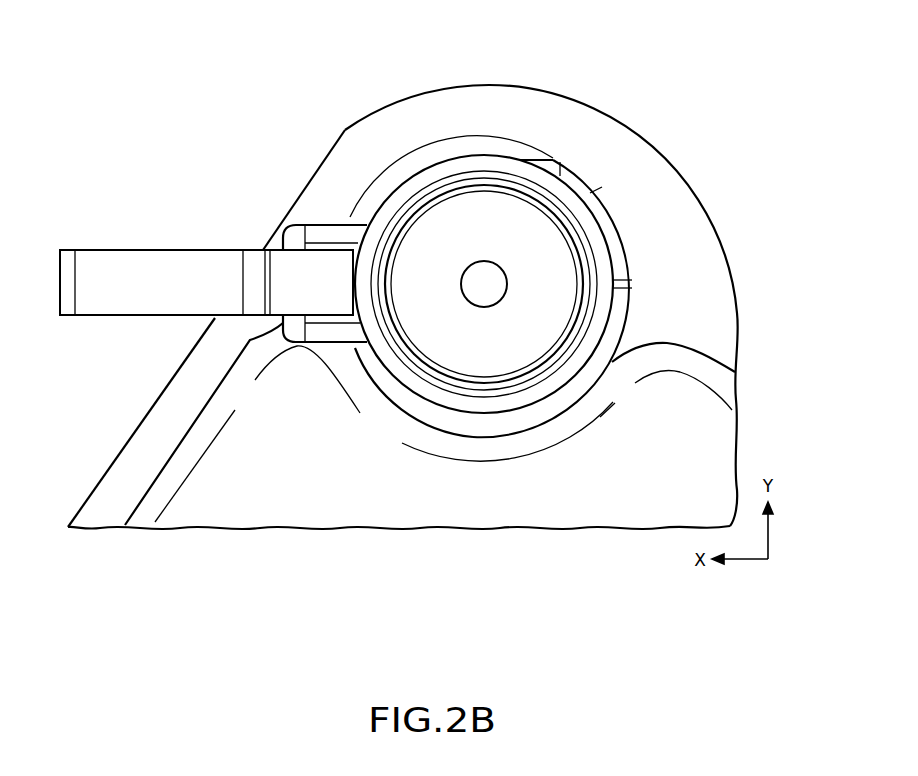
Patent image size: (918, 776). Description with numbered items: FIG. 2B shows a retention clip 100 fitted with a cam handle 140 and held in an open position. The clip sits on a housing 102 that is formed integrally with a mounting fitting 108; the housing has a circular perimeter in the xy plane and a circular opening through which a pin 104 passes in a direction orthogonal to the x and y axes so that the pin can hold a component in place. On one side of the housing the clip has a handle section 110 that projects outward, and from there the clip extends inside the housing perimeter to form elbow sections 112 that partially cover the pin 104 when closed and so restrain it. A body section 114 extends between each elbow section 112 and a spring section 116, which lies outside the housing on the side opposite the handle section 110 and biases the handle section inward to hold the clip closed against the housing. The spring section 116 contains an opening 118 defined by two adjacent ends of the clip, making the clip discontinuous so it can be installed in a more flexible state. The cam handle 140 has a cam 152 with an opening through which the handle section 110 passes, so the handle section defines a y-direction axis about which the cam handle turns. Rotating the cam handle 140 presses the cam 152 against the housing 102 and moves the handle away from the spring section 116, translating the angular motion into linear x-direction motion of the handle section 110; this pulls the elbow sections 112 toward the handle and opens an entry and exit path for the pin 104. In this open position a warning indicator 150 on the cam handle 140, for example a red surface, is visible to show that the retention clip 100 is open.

The retention clip 100 is at (287, 262).
The housing 102 is at (403, 187).
The pin 104 is at (518, 342).
The mounting fitting 108 is at (395, 133).
The handle section 110 is at (302, 328).
The elbow section 112 is at (458, 177).
The body section 114 is at (553, 158).
The spring section 116 is at (620, 242).
The opening 118 is at (625, 290).
The cam handle 140 is at (80, 249).
The warning indicator 150 is at (162, 272).
The cam 152 is at (290, 252).